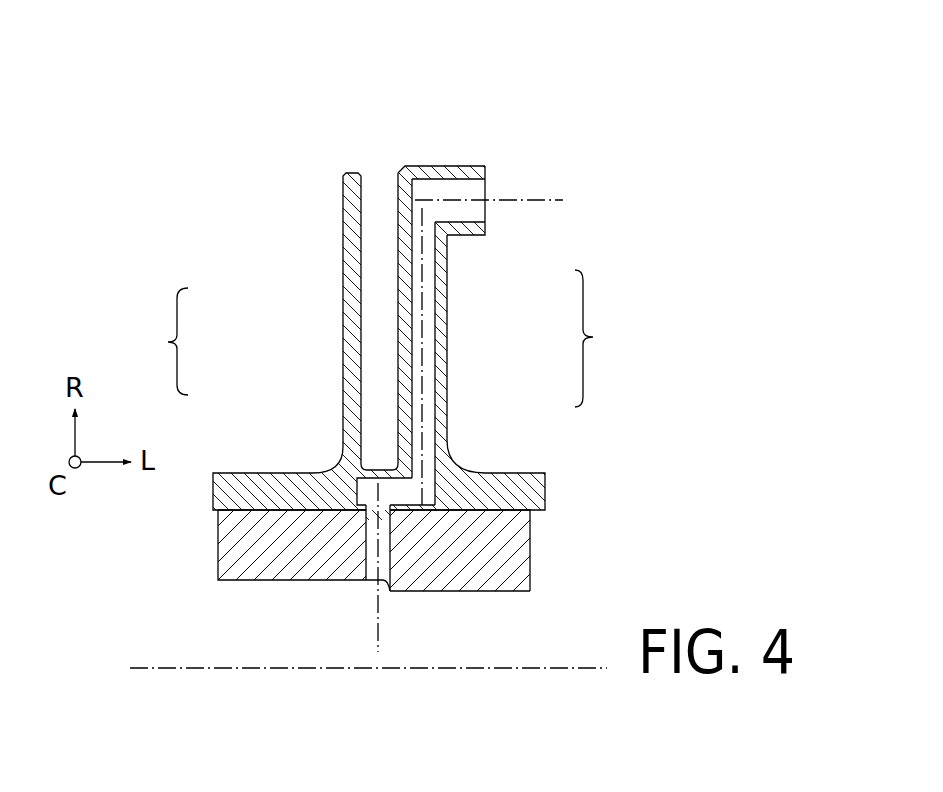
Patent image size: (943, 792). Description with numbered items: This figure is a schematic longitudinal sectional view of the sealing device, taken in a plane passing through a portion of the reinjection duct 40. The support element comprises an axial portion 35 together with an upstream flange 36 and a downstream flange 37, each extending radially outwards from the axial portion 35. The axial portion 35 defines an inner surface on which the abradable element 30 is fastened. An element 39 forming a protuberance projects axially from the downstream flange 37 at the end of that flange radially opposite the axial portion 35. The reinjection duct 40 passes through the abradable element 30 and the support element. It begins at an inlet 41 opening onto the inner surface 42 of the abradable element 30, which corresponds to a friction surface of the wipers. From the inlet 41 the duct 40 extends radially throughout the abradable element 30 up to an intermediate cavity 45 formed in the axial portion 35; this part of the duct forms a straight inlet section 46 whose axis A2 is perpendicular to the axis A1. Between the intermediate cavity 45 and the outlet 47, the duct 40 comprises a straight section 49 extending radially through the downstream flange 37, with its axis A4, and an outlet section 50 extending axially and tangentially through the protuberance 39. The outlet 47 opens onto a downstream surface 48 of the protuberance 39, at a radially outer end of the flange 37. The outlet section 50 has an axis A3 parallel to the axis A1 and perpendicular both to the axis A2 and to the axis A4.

The abradable element 30 is at (513, 552).
The axial portion 35 is at (253, 480).
The upstream flange 36 is at (352, 367).
The downstream flange 37 is at (402, 293).
The element forming a protuberance 39 is at (447, 166).
The reinjection duct 40 is at (606, 338).
The inlet 41 is at (367, 589).
The inner surface 42 is at (497, 595).
The intermediate cavity 45 is at (420, 492).
The straight inlet section 46 is at (383, 549).
The outlet 47 is at (512, 178).
The downstream surface 48 is at (486, 213).
The straight section 49 is at (422, 335).
The outlet section 50 is at (466, 215).
The axis A1 is at (195, 668).
The axis of the inlet section A2 is at (383, 650).
The axis of the outlet section A3 is at (553, 200).
The axis of the straight section A4 is at (421, 266).